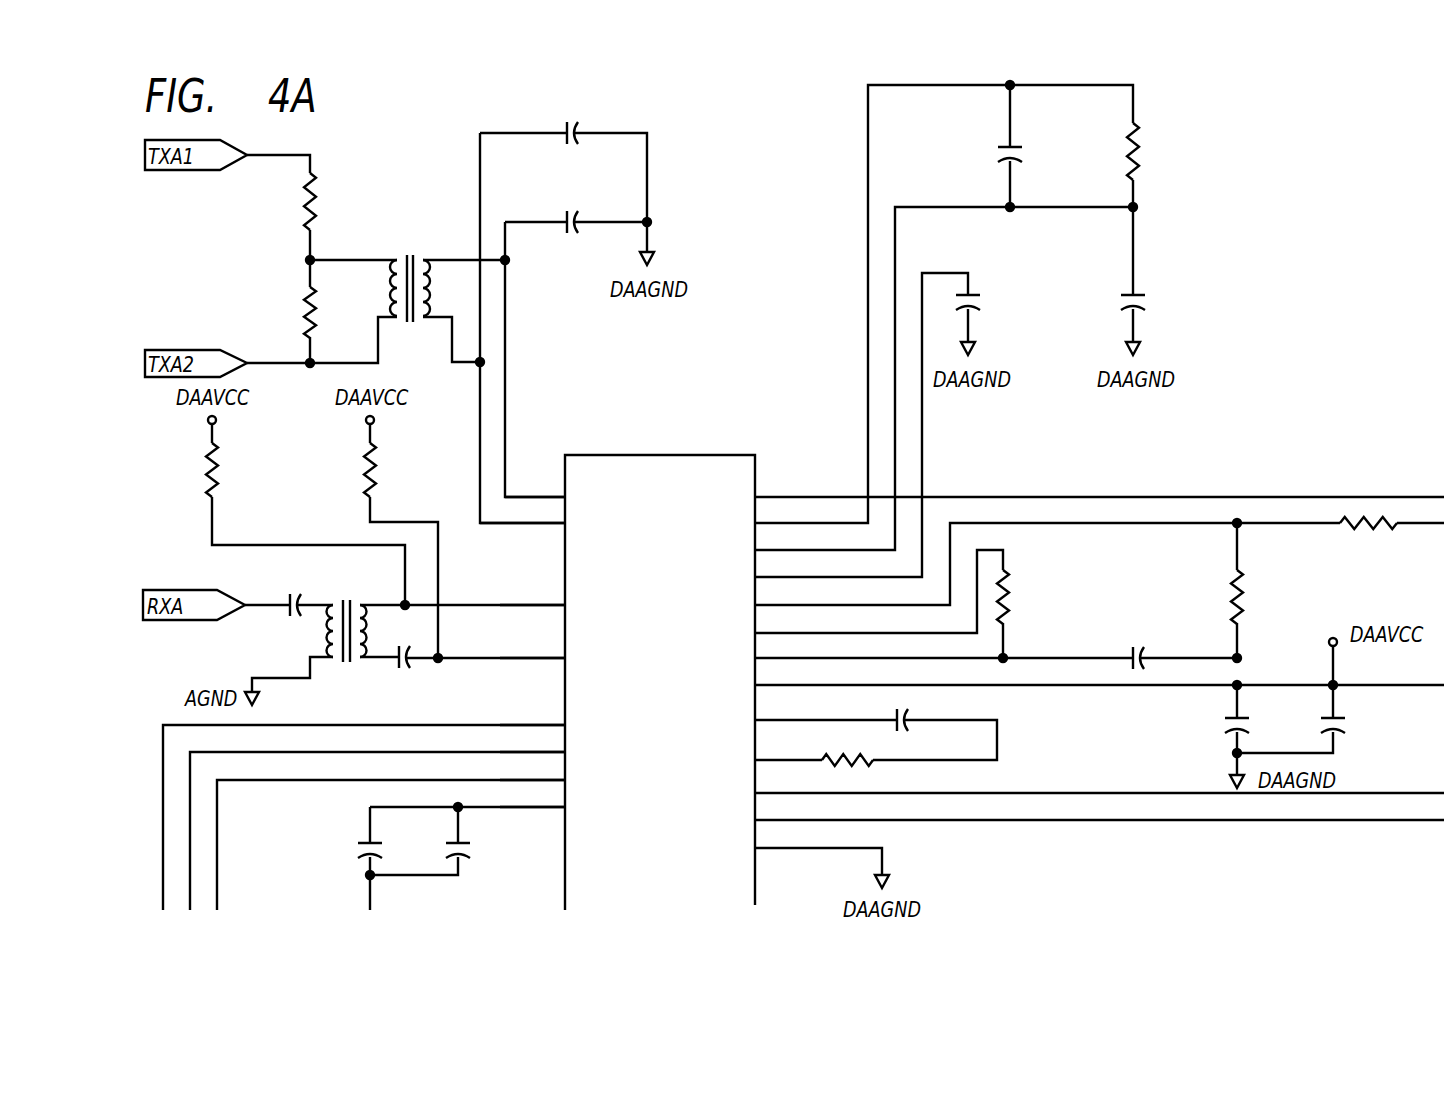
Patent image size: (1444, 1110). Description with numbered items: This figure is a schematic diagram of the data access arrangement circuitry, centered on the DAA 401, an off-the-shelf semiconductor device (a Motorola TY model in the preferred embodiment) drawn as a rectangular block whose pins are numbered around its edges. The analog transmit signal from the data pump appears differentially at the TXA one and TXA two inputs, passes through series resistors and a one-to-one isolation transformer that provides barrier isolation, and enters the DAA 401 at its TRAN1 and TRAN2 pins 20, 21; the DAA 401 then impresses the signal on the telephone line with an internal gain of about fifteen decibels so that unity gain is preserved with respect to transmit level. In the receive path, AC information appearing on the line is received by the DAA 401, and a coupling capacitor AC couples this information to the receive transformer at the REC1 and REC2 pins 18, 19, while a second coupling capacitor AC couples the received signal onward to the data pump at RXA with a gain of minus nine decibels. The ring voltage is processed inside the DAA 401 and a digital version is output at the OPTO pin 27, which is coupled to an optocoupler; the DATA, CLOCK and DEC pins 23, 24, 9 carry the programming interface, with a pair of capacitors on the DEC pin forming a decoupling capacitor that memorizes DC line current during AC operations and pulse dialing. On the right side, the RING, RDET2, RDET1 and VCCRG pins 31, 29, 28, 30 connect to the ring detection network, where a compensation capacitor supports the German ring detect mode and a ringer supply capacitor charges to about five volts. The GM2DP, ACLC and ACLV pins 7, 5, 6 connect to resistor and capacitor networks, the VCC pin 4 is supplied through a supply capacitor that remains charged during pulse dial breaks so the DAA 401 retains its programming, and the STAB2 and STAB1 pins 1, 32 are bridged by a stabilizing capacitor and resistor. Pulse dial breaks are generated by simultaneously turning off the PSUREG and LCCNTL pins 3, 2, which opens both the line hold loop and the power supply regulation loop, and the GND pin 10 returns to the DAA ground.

The DAA 401 is at (655, 653).
The TRAN1 pin 20 is at (573, 489).
The TRAN2 pin 21 is at (560, 515).
The REC1 pin 18 is at (564, 598).
The REC2 pin 19 is at (564, 653).
The OPTO pin 27 is at (565, 718).
The DATA pin 23 is at (563, 745).
The CLOCK pin 24 is at (571, 773).
The DEC pin 9 is at (559, 800).
The RING pin 31 is at (765, 488).
The RDET2 pin 29 is at (758, 516).
The RDET1 pin 28 is at (758, 543).
The VCCRG pin 30 is at (756, 571).
The GM2DP pin 7 is at (755, 598).
The ACLC pin 5 is at (763, 625).
The ACLV pin 6 is at (764, 653).
The VCC pin 4 is at (769, 679).
The STAB2 pin 1 is at (759, 713).
The STAB1 pin 32 is at (755, 752).
The PSUREG pin 3 is at (751, 786).
The LCCNTL pin 2 is at (753, 813).
The GND pin 10 is at (767, 841).